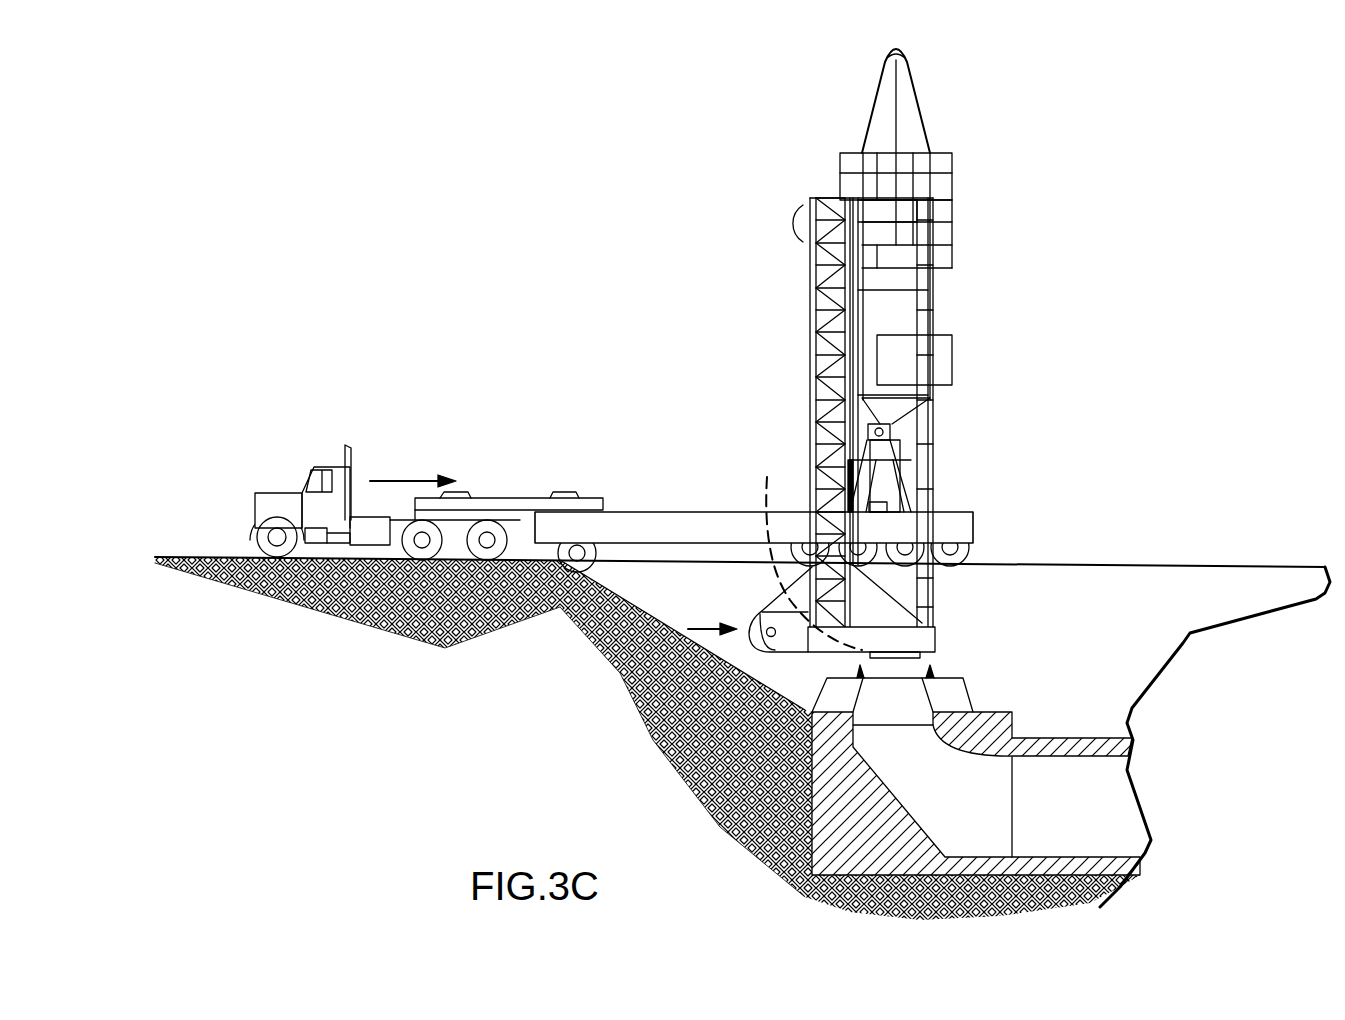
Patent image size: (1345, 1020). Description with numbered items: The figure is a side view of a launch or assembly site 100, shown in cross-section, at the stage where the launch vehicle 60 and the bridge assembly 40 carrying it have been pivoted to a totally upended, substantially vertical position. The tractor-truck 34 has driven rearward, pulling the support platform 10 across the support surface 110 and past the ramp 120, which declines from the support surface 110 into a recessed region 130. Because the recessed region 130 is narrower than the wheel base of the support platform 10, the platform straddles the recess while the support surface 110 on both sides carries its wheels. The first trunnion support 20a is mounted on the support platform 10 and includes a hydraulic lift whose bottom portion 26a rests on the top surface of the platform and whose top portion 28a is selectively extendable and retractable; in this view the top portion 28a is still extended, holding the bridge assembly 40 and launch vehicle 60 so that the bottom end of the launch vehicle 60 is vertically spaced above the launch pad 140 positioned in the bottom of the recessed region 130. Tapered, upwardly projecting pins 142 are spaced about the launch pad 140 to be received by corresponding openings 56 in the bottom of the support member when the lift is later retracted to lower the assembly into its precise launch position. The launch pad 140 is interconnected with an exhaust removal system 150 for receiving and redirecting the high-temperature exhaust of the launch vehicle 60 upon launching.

The support platform 10 is at (722, 522).
The first trunnion support 20a is at (887, 420).
The bottom portion 26a is at (877, 480).
The top portion 28a is at (877, 443).
The tractor-truck 34 is at (277, 500).
The bridge assembly 40 is at (765, 285).
The openings 56 is at (801, 547).
The launch vehicle 60 is at (935, 280).
The launch or assembly site 100 is at (1136, 506).
The support surface 110 is at (198, 555).
The ramp 120 is at (638, 600).
The recessed region 130 is at (735, 605).
The launch pad 140 is at (955, 700).
The tapered, upwardly projecting pins 142 is at (958, 680).
The exhaust removal system 150 is at (1033, 723).